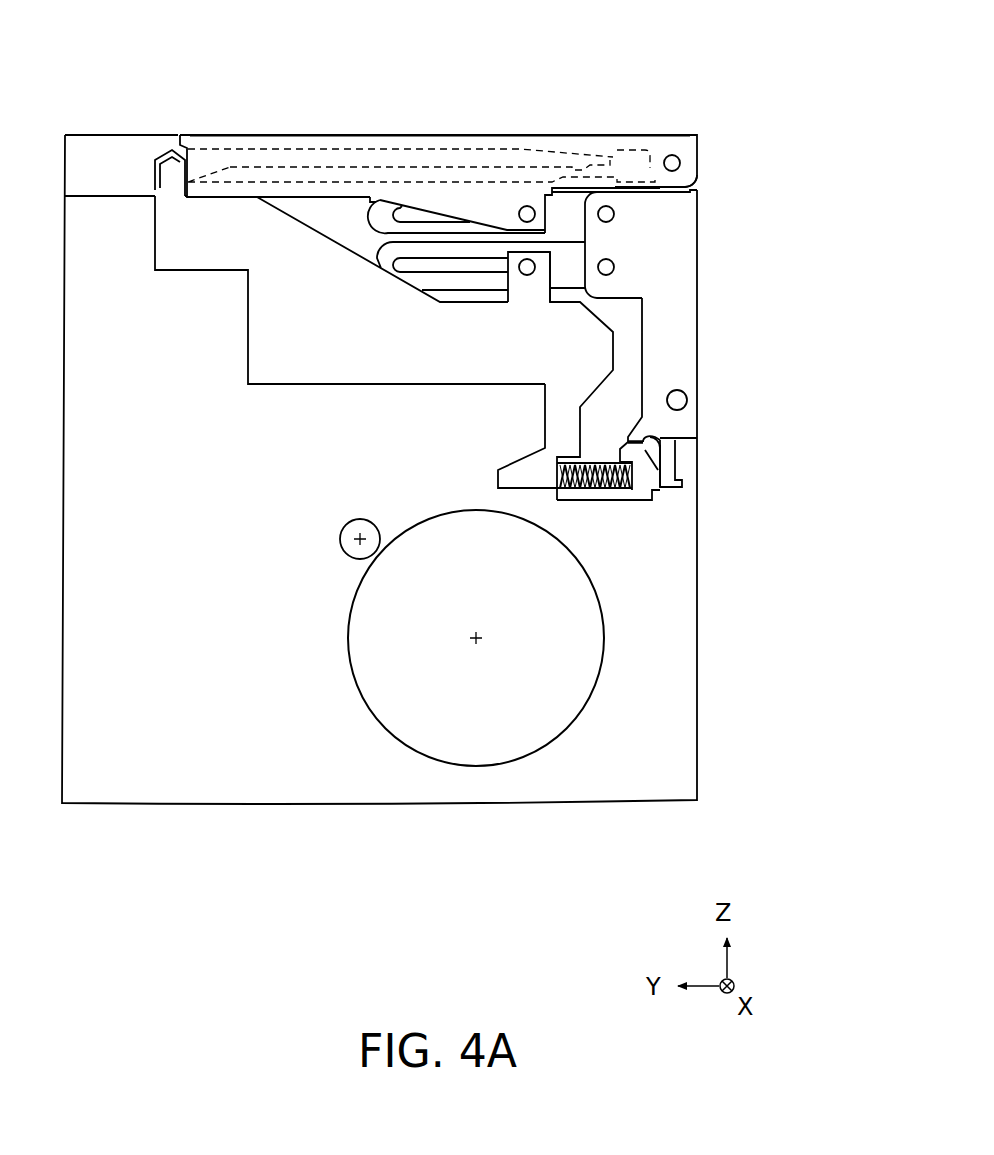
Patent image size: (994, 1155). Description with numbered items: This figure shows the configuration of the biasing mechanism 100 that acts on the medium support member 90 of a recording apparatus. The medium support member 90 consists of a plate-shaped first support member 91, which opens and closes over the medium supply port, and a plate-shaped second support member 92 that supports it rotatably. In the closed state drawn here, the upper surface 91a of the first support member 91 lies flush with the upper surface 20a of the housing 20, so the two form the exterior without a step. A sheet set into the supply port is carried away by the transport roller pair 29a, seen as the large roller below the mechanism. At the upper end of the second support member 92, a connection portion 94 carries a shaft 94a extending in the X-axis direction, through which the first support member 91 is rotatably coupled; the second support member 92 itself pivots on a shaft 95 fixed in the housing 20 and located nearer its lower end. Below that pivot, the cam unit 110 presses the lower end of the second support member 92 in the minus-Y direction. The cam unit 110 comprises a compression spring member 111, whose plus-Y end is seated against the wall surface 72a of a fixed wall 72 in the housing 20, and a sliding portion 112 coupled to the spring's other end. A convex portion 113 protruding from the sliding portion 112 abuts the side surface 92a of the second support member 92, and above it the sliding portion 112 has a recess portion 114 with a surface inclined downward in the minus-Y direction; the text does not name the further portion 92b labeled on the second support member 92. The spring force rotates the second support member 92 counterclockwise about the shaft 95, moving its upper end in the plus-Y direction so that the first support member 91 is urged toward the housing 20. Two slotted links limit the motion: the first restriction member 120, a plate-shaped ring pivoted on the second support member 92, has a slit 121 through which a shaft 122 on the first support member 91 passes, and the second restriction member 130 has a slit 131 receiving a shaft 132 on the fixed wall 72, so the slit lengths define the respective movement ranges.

The housing 20 is at (85, 132).
The upper surface of the housing 20a is at (128, 133).
The transport roller pair 29a is at (352, 655).
The fixed wall 72 is at (545, 408).
The wall surface 72a is at (558, 462).
The medium support member 90 is at (603, 58).
The first support member 91 is at (597, 133).
The upper surface of the first support member 91a is at (267, 133).
The second support member 92 is at (680, 245).
The side surface 92a is at (658, 435).
The holding portion of bracket 92b is at (662, 488).
The connection portion 94 is at (686, 156).
The shaft 94a is at (675, 142).
The shaft 95 is at (688, 398).
The biasing mechanism 100 is at (786, 130).
The cam unit 110 is at (633, 580).
The spring member 111 is at (592, 490).
The sliding portion 112 is at (642, 502).
The convex portion 113 is at (665, 490).
The recess portion 114 is at (655, 458).
The first restriction member 120 is at (360, 215).
The slit 121 is at (405, 212).
The shaft 122 is at (527, 205).
The second restriction member 130 is at (383, 265).
The slit 131 is at (470, 272).
The shaft 132 is at (527, 278).